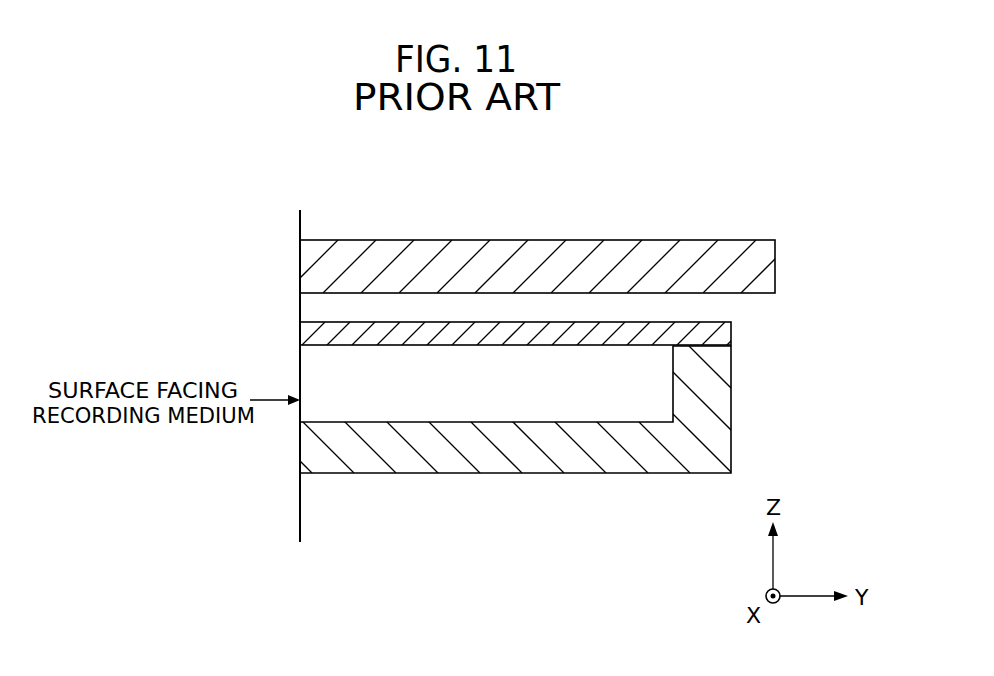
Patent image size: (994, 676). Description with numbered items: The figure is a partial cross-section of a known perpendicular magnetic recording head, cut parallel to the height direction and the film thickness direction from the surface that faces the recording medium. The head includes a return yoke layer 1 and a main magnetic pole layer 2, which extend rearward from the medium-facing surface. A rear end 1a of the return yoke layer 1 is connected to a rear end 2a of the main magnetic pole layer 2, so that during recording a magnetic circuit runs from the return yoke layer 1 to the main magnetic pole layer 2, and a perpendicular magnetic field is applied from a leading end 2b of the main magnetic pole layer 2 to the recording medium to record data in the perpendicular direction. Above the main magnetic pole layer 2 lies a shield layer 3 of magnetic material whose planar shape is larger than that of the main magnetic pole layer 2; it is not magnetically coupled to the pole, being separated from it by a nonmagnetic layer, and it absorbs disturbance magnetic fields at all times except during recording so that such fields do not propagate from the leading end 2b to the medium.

The return yoke layer 1 is at (568, 455).
The rear end of the return yoke layer 1a is at (717, 383).
The main magnetic pole layer 2 is at (475, 333).
The rear end of the main magnetic pole layer 2a is at (687, 333).
The leading end of the main magnetic pole layer 2b is at (298, 338).
The shield layer 3 is at (760, 267).